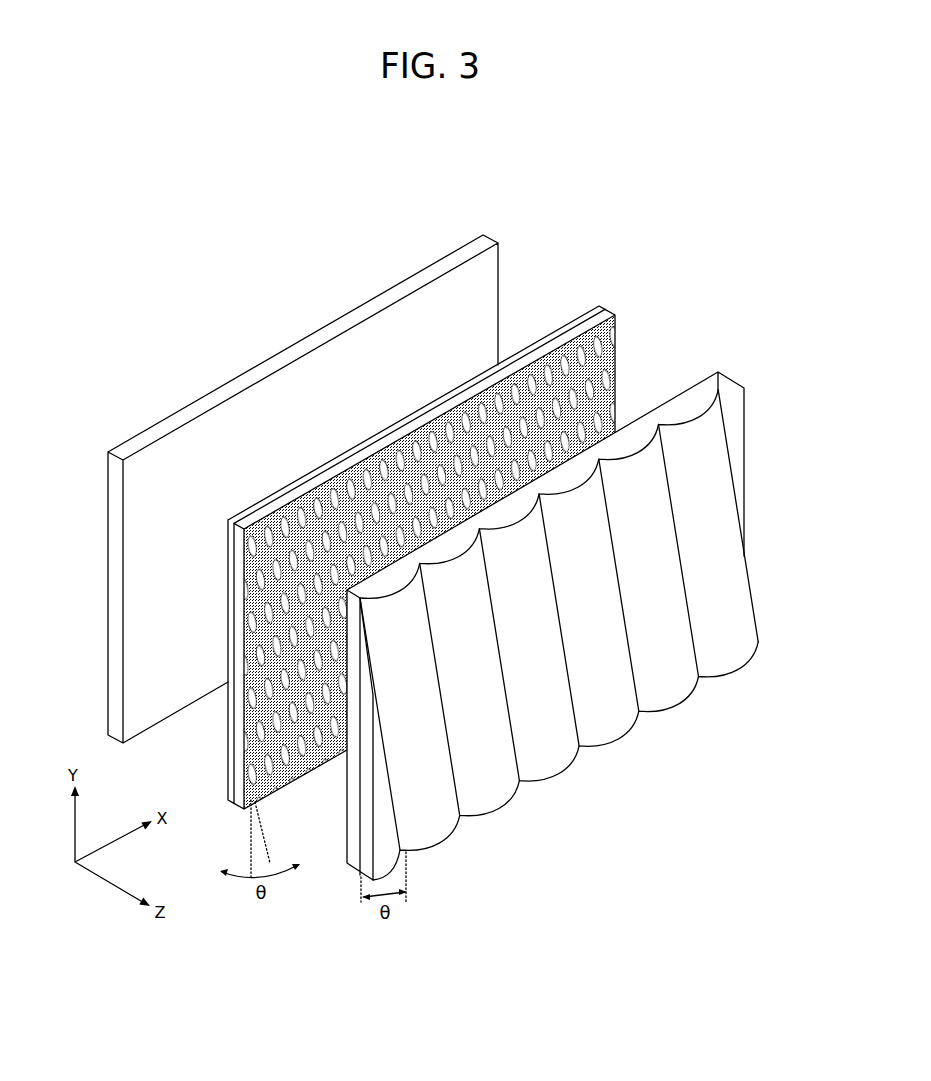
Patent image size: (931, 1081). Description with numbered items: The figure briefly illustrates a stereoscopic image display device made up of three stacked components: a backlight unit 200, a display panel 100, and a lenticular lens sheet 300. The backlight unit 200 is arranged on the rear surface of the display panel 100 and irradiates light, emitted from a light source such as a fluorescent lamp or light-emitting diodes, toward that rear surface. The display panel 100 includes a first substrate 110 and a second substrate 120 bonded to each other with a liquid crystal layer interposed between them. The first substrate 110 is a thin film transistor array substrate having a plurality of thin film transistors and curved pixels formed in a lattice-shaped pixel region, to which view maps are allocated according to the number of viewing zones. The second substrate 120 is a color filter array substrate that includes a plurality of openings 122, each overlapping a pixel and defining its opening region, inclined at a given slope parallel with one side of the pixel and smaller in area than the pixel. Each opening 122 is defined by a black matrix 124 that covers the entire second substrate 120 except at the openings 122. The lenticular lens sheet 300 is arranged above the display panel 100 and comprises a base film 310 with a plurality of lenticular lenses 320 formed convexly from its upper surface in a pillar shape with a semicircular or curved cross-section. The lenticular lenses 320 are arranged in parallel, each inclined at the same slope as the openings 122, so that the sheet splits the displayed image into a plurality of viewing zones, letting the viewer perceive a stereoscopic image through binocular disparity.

The backlight unit 200 is at (487, 238).
The display panel 100 is at (454, 498).
The first substrate 110 is at (598, 306).
The second substrate 120 is at (457, 525).
The opening 122 is at (612, 347).
The black matrix 124 is at (617, 380).
The lenticular lens sheet 300 is at (577, 572).
The base film 310 is at (713, 371).
The lenticular lens 320 is at (717, 455).